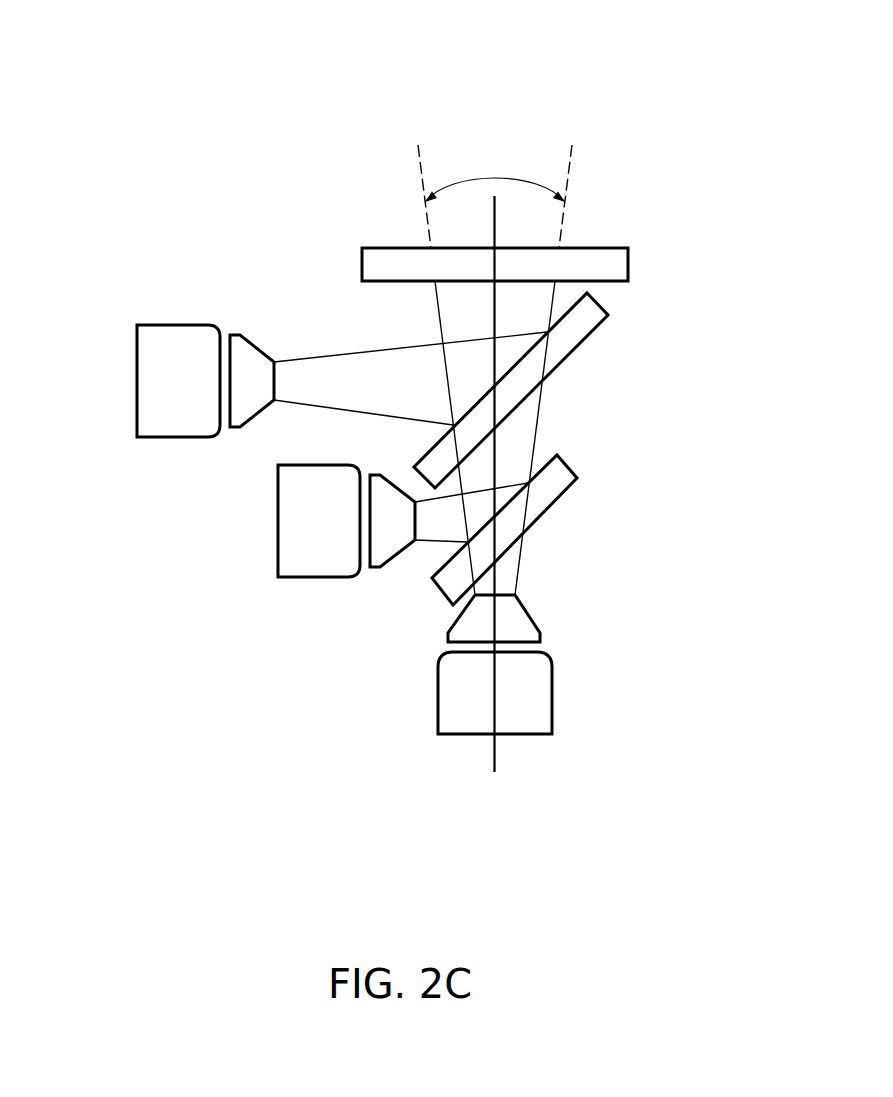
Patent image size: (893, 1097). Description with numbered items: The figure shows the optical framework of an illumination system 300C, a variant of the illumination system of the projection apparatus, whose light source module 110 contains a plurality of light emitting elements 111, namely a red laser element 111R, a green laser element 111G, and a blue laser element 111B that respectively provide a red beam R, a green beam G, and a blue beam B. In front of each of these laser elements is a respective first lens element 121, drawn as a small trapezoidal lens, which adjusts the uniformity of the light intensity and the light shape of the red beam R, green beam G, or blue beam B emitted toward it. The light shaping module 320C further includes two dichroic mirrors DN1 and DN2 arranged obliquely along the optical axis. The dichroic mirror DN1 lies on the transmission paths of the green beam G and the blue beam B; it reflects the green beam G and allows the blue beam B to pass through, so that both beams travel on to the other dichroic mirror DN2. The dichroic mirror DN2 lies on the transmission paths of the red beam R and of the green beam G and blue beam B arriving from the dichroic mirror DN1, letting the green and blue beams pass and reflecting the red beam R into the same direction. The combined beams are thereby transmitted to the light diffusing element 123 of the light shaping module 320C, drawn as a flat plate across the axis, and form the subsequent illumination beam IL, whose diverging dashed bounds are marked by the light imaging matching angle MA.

The light shaping module 320C is at (707, 225).
The illumination beam IL is at (587, 222).
The light imaging matching angle MA is at (523, 180).
The light diffusing element 123 is at (615, 263).
The dichroic mirror DN2 is at (578, 332).
The dichroic mirror DN1 is at (555, 478).
The light source module 110 is at (362, 552).
The light emitting element 111 is at (406, 529).
The red laser element 111R is at (172, 423).
The green laser element 111G is at (312, 560).
The blue laser element 111B is at (535, 695).
The first lens element 121 is at (248, 357).
The red beam R is at (325, 378).
The green beam G is at (438, 528).
The blue beam B is at (503, 575).
The illumination system 300C is at (694, 837).